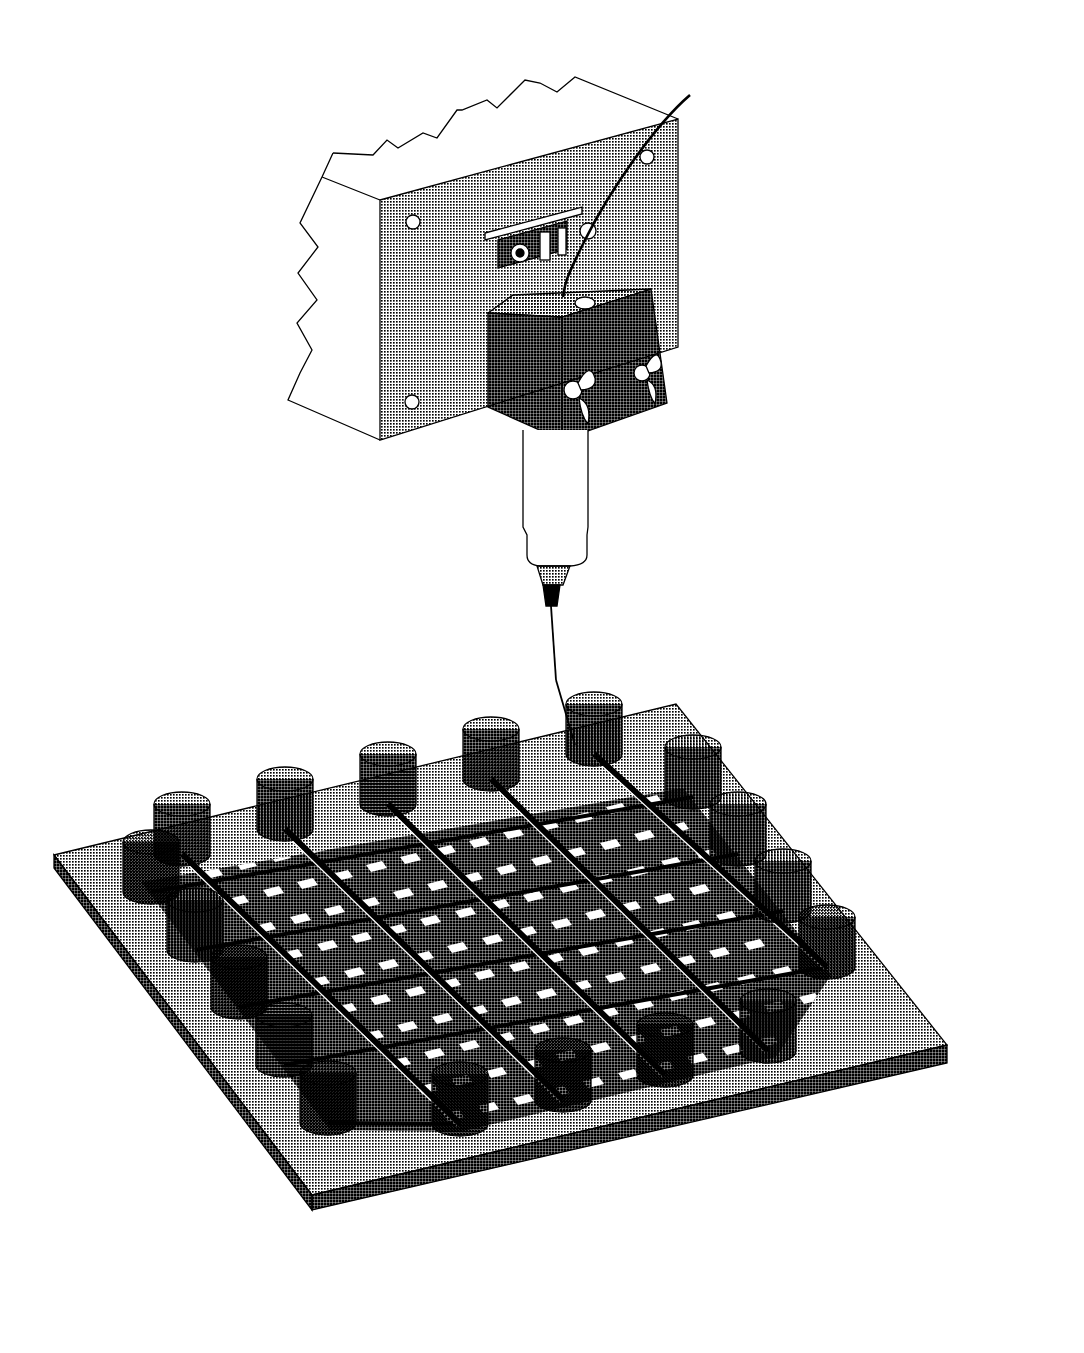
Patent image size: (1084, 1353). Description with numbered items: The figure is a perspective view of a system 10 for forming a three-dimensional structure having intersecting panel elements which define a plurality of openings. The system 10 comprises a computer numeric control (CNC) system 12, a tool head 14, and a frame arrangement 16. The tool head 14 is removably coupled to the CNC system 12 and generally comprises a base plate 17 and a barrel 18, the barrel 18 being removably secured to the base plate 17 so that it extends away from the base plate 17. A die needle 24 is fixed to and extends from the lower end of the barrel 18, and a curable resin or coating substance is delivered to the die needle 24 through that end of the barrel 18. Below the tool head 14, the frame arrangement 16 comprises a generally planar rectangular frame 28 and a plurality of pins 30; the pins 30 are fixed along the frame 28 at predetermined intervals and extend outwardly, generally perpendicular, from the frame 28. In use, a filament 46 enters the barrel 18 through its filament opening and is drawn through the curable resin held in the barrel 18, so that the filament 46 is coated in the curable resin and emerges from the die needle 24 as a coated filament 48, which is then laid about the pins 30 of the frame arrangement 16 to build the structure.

The system 10 is at (203, 224).
The computer numeric control (CNC) system 12 is at (352, 349).
The tool head 14 is at (630, 375).
The frame arrangement 16 is at (500, 931).
The base plate 17 is at (643, 243).
The barrel 18 is at (550, 478).
The die needle 24 is at (550, 622).
The frame 28 is at (845, 1036).
The pins 30 is at (263, 767).
The filament 46 is at (678, 117).
The coated filament 48 is at (567, 690).